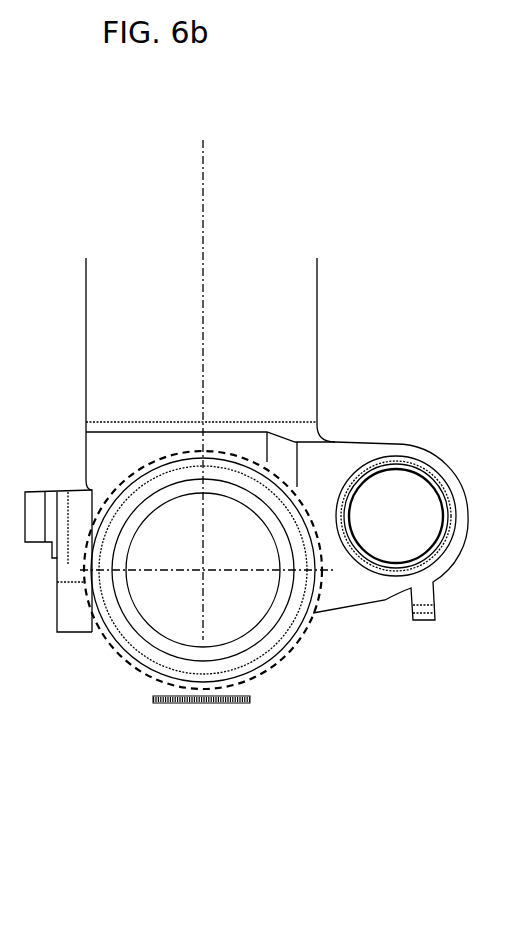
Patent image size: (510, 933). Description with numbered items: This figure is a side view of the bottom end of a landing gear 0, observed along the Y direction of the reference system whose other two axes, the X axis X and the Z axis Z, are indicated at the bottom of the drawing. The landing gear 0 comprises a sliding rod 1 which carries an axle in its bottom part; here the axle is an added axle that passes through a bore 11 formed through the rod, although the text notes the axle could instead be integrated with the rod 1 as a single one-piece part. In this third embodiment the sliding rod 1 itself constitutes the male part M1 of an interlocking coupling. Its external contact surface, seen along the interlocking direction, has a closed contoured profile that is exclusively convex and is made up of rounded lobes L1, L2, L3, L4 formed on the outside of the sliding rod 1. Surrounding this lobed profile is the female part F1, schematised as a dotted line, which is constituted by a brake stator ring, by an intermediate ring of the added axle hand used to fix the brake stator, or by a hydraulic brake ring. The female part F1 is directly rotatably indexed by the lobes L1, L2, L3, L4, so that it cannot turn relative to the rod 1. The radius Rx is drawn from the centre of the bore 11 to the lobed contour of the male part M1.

The landing gear 0 is at (115, 195).
The sliding rod 1 is at (107, 283).
The bore 11 is at (182, 622).
The rounded lobe L1 is at (132, 643).
The rounded lobe L2 is at (130, 500).
The rounded lobe L3 is at (270, 500).
The rounded lobe L4 is at (273, 642).
The female part F1 is at (132, 670).
The male part M1 is at (223, 457).
The radius Rx is at (207, 578).
The Z axis of the XYZ system Z is at (205, 787).
The X axis of the XYZ system X is at (205, 787).